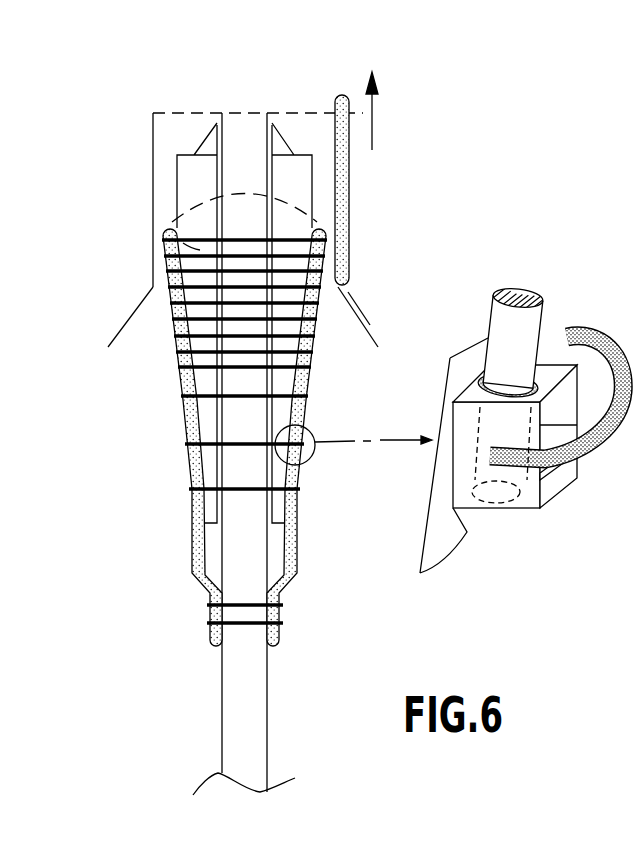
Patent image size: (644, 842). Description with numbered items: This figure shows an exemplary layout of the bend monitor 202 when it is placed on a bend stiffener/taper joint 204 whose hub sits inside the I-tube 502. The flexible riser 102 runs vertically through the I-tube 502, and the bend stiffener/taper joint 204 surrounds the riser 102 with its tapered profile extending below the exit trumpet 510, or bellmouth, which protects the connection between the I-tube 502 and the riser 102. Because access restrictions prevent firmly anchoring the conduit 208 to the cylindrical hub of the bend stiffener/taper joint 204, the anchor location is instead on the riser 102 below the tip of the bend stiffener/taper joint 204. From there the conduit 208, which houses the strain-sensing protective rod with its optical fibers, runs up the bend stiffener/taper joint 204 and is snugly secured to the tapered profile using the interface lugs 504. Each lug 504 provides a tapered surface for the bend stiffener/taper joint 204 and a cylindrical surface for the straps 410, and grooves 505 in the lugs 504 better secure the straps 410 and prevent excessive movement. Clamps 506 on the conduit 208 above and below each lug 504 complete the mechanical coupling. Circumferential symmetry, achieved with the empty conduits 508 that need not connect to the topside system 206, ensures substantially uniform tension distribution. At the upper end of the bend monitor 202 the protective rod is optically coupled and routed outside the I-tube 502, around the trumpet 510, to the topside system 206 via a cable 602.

The flexible riser 102 is at (235, 663).
The bend monitor 202 is at (346, 369).
The bend stiffener/taper joint 204 is at (212, 506).
The topside system 206 is at (431, 111).
The conduit 208 is at (350, 257).
The straps 410 is at (605, 335).
The I-tube 502 is at (153, 163).
The lugs 504 is at (577, 477).
The grooves 505 is at (548, 477).
The clamps 506 is at (500, 387).
The empty conduits 508 is at (187, 427).
The exit trumpet 510 is at (123, 323).
The cable 602 is at (245, 193).